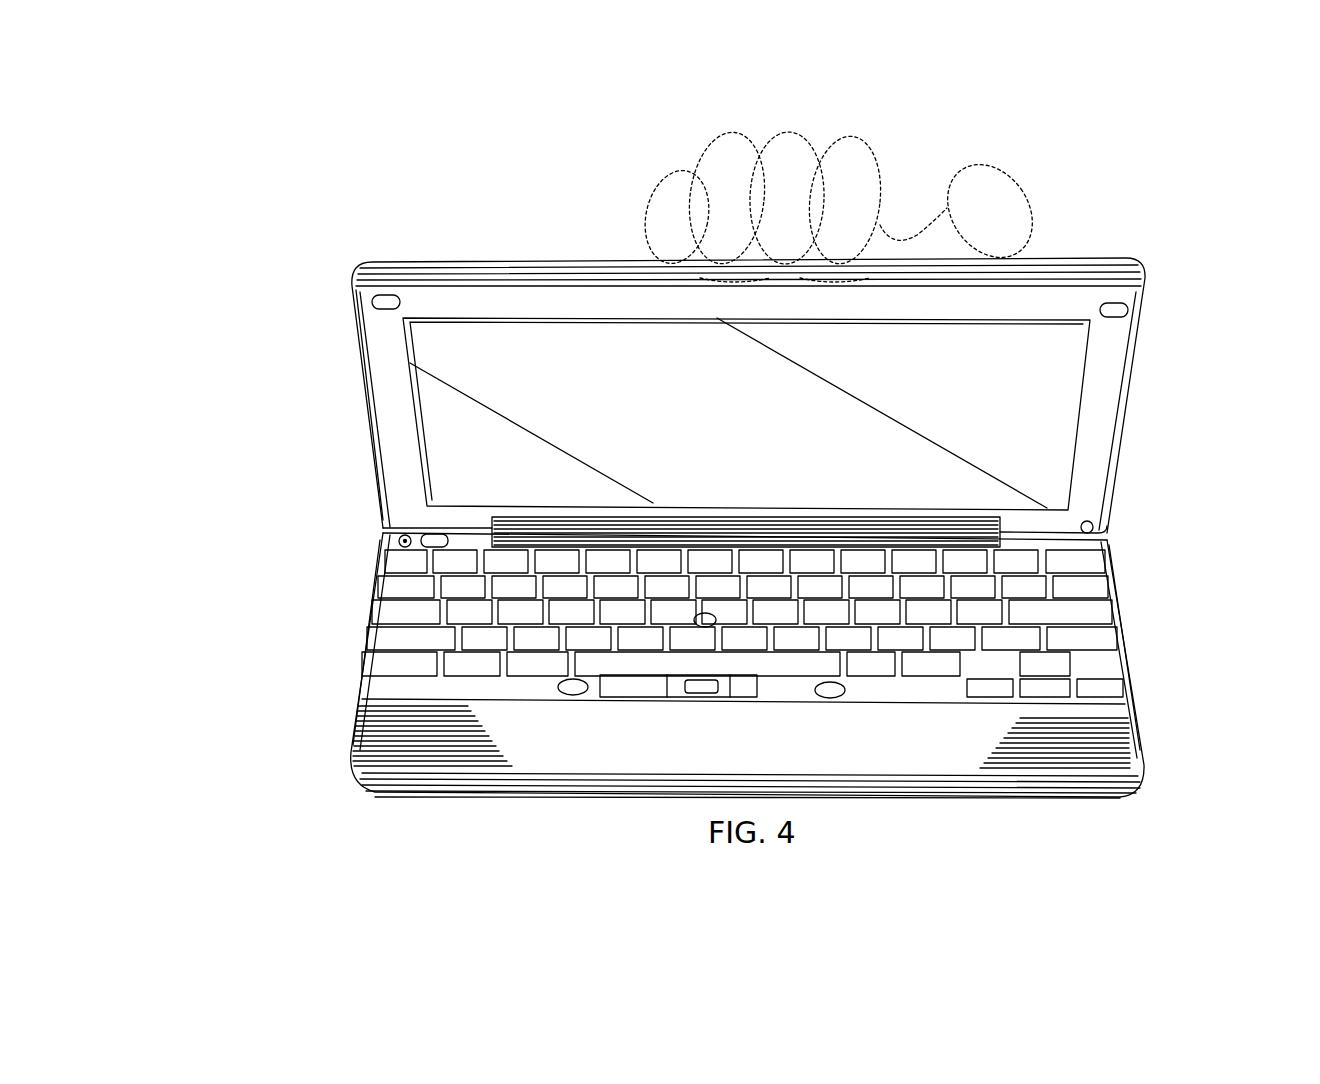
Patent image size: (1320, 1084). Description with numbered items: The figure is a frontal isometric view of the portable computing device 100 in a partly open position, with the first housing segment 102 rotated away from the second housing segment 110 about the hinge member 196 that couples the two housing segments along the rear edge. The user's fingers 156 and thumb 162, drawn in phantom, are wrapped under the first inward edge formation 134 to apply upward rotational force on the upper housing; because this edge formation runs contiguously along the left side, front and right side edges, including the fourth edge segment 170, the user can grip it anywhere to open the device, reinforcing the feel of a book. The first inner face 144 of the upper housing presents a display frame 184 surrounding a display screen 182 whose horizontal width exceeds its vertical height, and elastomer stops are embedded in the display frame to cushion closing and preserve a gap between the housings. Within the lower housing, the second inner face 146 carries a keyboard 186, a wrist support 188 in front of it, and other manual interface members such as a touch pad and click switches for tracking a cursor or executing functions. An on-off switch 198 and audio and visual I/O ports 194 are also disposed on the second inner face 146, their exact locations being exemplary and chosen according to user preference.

The portable computing device 100 is at (253, 262).
The first housing segment 102 is at (1177, 313).
The second housing segment 110 is at (1155, 707).
The first inward edge formation 134 is at (890, 270).
The first inner face 144 is at (620, 152).
The second inner face 146 is at (968, 745).
The fingers 156 is at (713, 143).
The thumb 162 is at (1007, 170).
The fourth edge segment 170 is at (1127, 483).
The display screen 182 is at (487, 347).
The display frame 184 is at (463, 290).
The keyboard 186 is at (408, 582).
The wrist support 188 is at (363, 743).
The audio and visual I/O ports 194 is at (427, 524).
The hinge member 196 is at (980, 527).
The on-off switch 198 is at (398, 539).